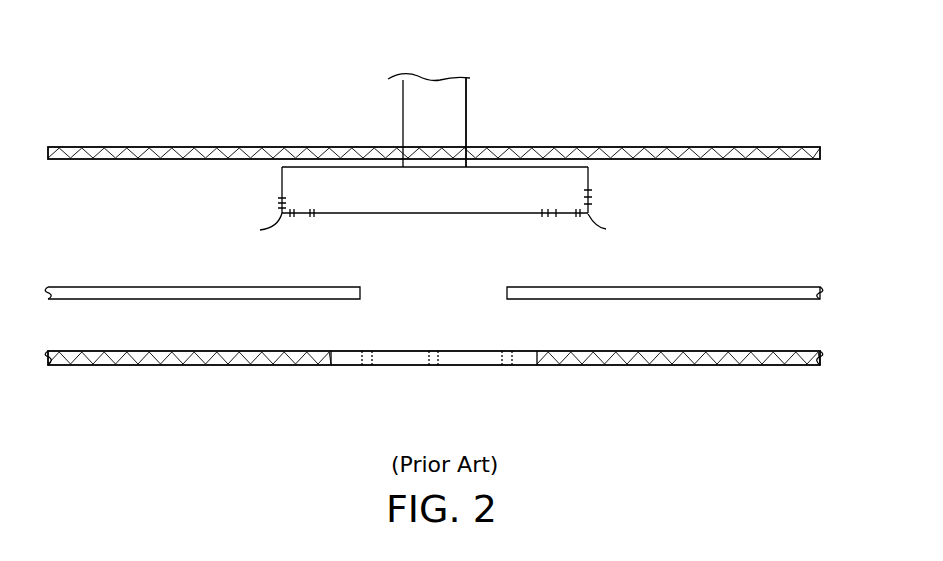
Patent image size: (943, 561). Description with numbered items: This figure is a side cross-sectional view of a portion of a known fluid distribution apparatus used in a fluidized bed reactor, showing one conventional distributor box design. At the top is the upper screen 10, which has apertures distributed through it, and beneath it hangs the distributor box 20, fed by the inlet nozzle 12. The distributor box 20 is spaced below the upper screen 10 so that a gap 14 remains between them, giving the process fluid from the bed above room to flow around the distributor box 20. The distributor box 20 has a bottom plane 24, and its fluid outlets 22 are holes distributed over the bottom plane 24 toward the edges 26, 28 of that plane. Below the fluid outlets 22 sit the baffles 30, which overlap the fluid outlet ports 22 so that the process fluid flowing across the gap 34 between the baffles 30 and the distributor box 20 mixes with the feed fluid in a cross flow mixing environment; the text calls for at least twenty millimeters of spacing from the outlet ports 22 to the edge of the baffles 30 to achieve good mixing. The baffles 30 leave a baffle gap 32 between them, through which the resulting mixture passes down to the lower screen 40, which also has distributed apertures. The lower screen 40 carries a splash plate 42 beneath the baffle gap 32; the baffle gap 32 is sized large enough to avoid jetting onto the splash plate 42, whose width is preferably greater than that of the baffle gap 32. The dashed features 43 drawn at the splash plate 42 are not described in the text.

The upper screen 10 is at (672, 147).
The inlet nozzle 12 is at (438, 86).
The gap 14 is at (355, 167).
The distributor box 20 is at (520, 167).
The fluid outlets 22 is at (312, 213).
The bottom plane 24 is at (378, 213).
The edge of the bottom plane 26 is at (254, 228).
The edge of the bottom plane 28 is at (615, 228).
The baffles 30 is at (120, 287).
The baffle gap 32 is at (437, 294).
The gap 34 is at (265, 258).
The lower screen 40 is at (242, 366).
The splash plate 42 is at (490, 366).
The hinge 43 is at (366, 366).